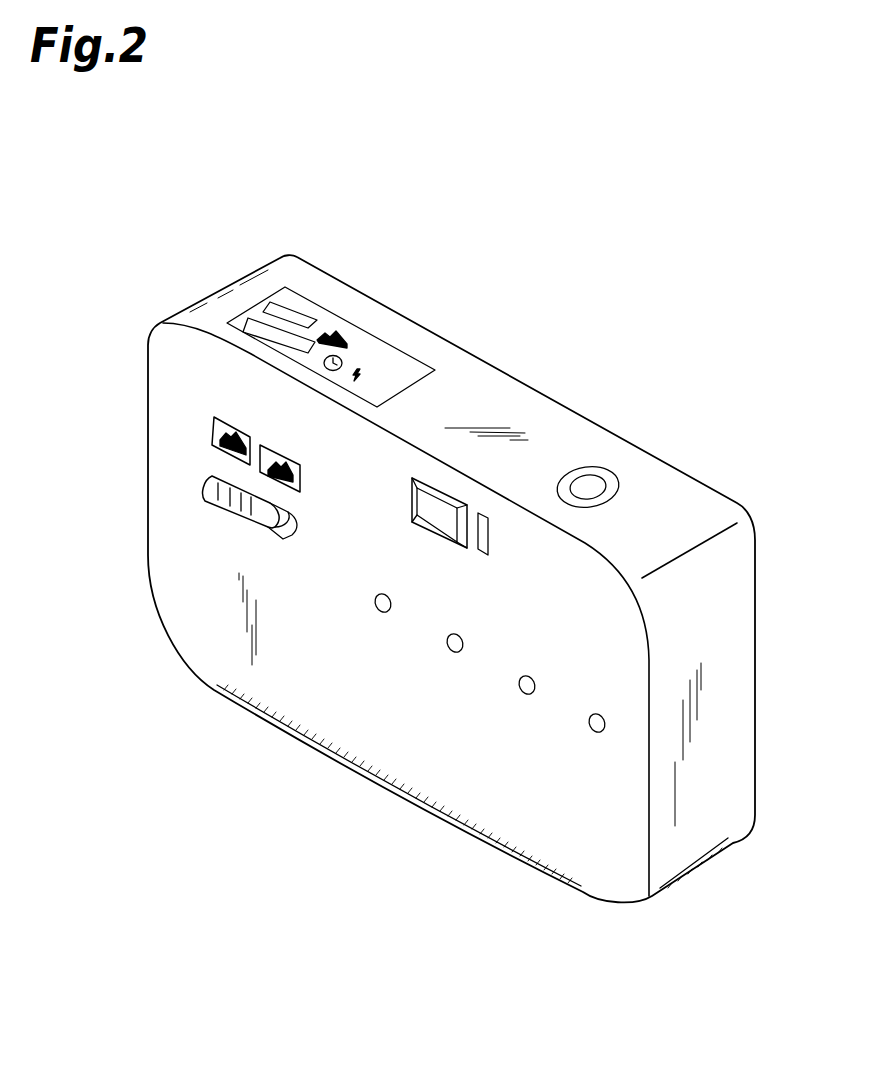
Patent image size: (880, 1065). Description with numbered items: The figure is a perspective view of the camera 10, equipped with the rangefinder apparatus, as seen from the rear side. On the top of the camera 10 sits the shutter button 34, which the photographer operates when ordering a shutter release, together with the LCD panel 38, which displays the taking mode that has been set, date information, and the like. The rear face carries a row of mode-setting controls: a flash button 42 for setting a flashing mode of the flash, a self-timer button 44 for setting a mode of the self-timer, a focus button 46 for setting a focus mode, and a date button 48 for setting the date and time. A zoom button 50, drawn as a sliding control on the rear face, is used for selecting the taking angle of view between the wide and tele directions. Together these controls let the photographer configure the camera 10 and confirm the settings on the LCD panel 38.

The camera 10 is at (520, 352).
The shutter button 34 is at (587, 480).
The LCD panel 38 is at (405, 370).
The flash button 42 is at (377, 596).
The self-timer button 44 is at (449, 636).
The focus button 46 is at (521, 677).
The date button 48 is at (591, 715).
The zoom button 50 is at (222, 503).